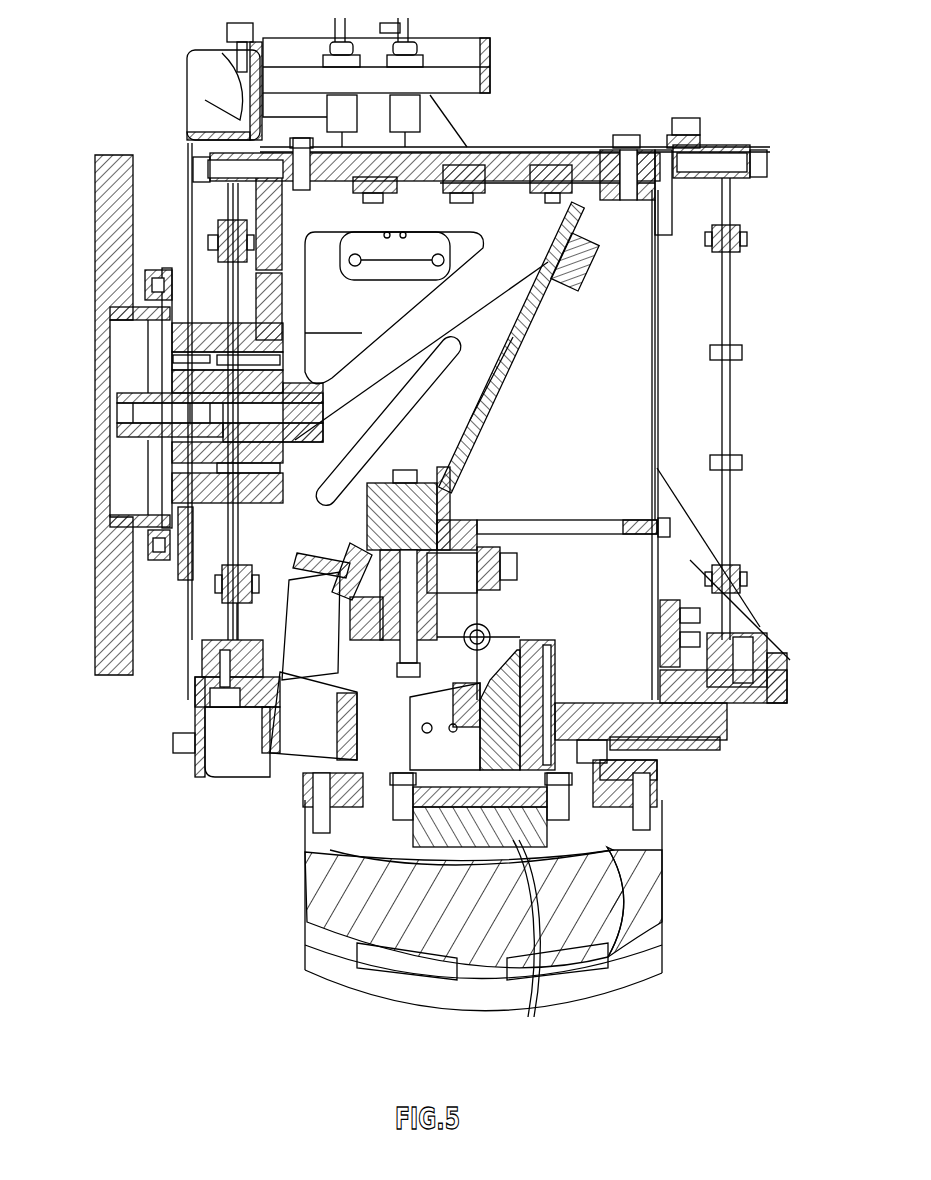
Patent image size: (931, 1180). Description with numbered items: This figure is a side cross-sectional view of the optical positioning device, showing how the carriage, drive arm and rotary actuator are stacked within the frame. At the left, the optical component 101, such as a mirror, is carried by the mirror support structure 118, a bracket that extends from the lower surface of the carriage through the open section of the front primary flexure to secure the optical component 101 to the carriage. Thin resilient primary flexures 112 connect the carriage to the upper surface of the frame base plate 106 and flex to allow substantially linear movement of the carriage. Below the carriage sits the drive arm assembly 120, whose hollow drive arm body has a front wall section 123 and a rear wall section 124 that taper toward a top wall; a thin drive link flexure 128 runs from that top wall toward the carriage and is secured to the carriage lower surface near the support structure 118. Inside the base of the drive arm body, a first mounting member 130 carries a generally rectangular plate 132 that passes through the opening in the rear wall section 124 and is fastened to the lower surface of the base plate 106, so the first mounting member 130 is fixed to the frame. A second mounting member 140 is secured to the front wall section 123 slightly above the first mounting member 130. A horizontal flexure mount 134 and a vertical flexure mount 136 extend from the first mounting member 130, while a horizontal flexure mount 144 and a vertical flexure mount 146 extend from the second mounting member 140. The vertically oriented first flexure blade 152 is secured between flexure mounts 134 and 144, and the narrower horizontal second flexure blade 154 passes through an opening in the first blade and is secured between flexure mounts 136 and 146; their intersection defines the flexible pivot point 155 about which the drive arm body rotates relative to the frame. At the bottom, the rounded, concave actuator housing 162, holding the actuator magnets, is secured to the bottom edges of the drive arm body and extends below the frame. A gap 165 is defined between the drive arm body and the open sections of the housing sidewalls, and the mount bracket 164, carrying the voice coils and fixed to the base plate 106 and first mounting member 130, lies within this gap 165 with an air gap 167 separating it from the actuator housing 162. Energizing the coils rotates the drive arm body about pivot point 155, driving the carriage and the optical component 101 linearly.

The optical component 101 is at (95, 260).
The mirror support structure 118 is at (203, 333).
The primary flexures 112 is at (232, 590).
The rear wall section 124 is at (658, 318).
The drive arm assembly 120 is at (596, 385).
The drive link flexure 128 is at (510, 175).
The front wall section 123 is at (447, 437).
The second mounting member 140 is at (460, 507).
The flexure mount 144 is at (490, 522).
The first flexure blade 152 is at (567, 521).
The second flexure blade 154 is at (530, 610).
The pivot point 155 is at (465, 648).
The flexure mount 146 is at (381, 650).
The flexure mount 136 is at (580, 642).
The first mounting member 130 is at (585, 697).
The flexure mount 134 is at (497, 745).
The plate 132 is at (625, 705).
The base plate 106 is at (787, 710).
The actuator housing 162 is at (652, 906).
The mount bracket 164 is at (530, 1017).
The air gap 167 is at (612, 945).
The gap 165 is at (360, 825).